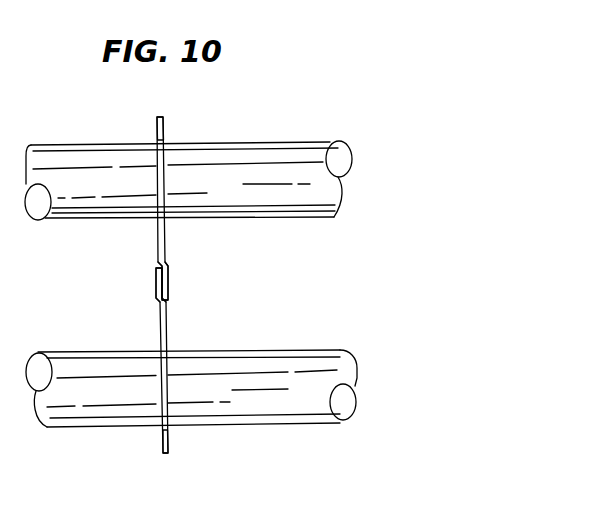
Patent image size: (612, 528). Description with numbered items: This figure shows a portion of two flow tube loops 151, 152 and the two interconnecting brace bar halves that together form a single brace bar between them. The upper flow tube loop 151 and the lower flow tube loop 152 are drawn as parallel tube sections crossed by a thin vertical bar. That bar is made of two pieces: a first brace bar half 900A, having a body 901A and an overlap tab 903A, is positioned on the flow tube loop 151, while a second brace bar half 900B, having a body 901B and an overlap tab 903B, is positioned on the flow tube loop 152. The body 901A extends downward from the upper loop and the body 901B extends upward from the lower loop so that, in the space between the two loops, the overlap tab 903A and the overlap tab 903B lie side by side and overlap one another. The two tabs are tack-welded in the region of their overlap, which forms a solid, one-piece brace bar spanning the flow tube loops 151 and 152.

The flow tube loop 151 is at (303, 145).
The flow tube loop 152 is at (307, 347).
The body 901A is at (163, 135).
The body 901B is at (168, 430).
The overlap tab 903A is at (170, 280).
The overlap tab 903B is at (157, 285).
The brace bar half 900A is at (146, 128).
The brace bar half 900B is at (149, 435).